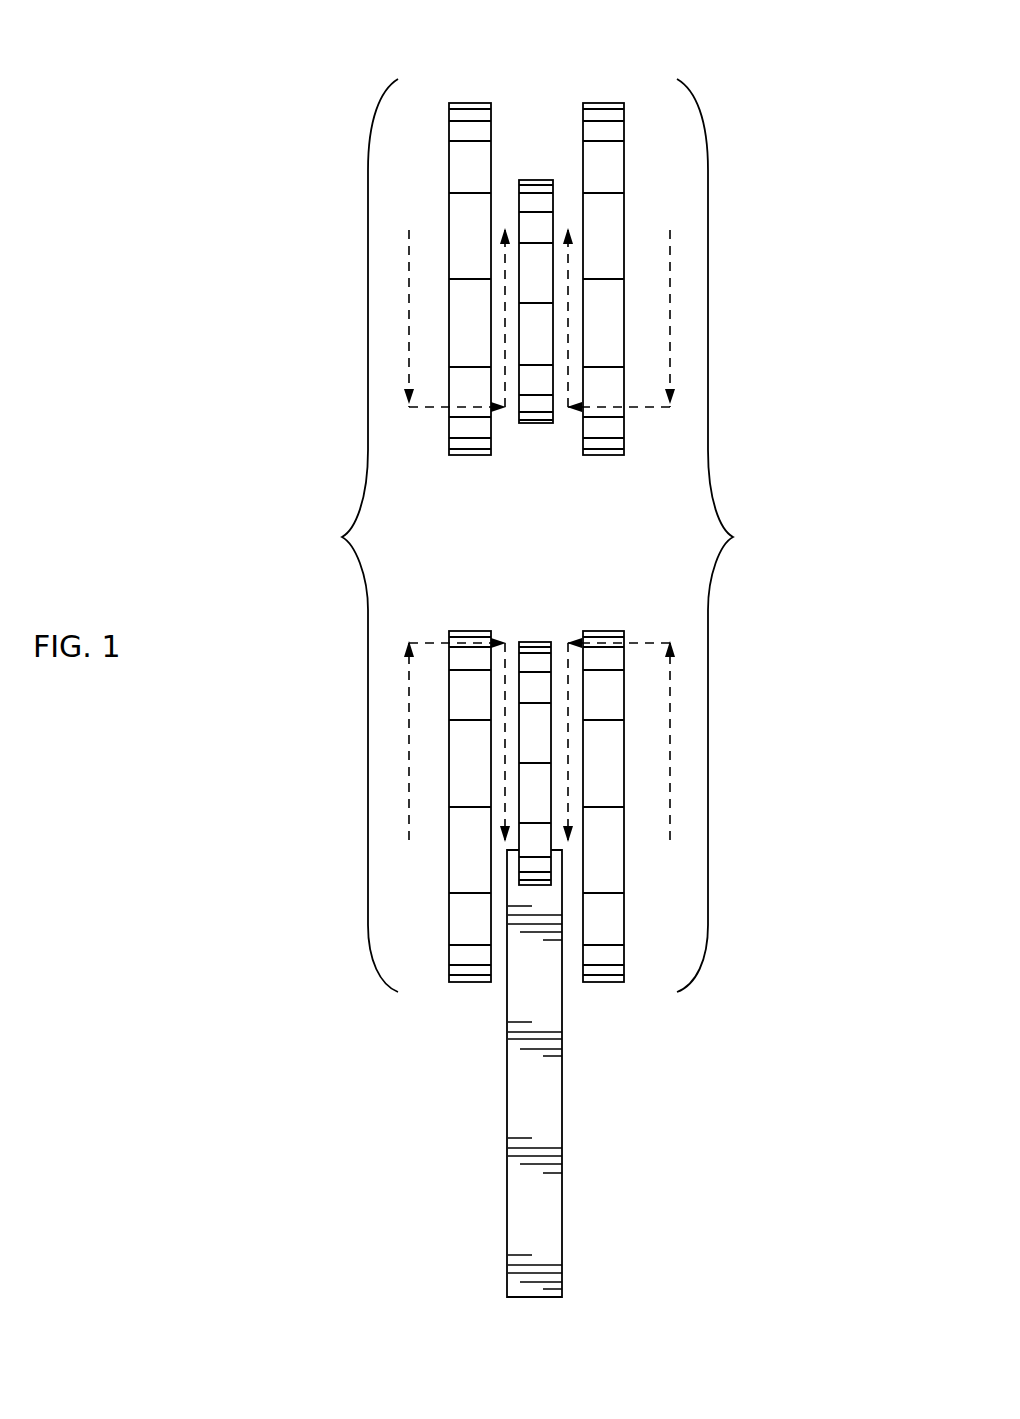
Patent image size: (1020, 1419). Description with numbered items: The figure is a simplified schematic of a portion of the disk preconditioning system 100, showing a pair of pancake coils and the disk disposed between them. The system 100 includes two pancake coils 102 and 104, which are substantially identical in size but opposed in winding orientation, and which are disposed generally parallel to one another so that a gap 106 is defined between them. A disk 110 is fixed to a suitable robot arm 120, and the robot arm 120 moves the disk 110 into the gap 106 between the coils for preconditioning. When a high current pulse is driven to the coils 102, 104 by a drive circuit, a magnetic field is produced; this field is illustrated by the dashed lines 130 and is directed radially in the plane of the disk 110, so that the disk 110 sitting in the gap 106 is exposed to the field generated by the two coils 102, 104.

The disk preconditioning system 100 is at (296, 29).
The pancake coil 102 is at (733, 537).
The pancake coil 104 is at (342, 537).
The gap 106 is at (587, 82).
The disk 110 is at (537, 425).
The robot arm 120 is at (562, 1248).
The dashed lines 130 is at (668, 273).